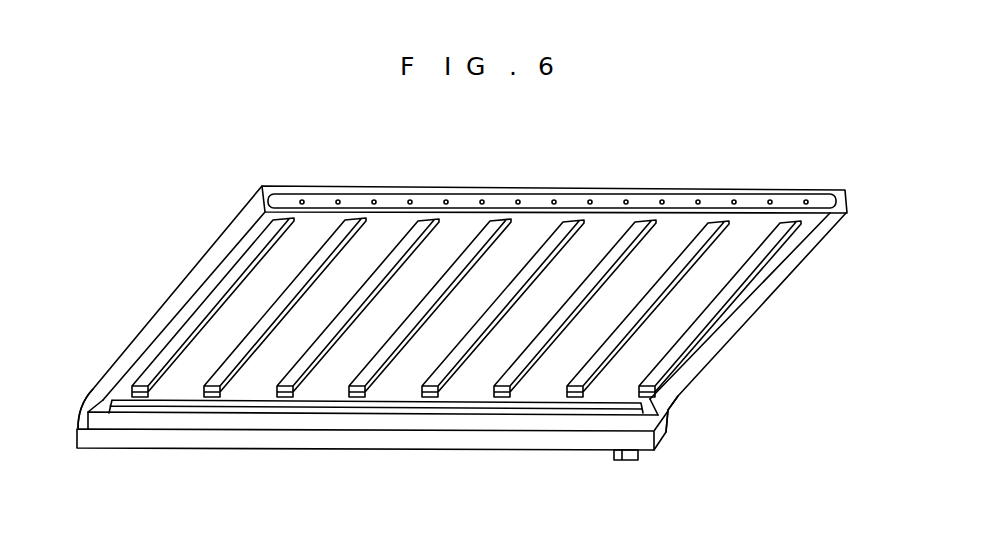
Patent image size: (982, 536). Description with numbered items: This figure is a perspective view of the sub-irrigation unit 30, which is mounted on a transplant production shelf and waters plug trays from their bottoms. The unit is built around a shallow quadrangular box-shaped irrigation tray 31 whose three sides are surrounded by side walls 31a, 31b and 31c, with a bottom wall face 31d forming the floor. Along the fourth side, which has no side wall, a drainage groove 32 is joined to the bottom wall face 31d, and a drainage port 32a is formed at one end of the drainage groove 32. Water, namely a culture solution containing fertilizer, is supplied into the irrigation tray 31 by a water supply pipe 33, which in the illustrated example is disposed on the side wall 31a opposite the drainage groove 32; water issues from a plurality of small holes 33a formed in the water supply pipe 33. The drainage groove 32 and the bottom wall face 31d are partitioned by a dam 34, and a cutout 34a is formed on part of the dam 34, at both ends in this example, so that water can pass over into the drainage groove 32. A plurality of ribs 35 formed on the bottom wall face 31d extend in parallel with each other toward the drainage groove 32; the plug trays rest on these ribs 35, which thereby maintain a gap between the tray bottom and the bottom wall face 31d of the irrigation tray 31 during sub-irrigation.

The sub-irrigation unit 30 is at (296, 170).
The irrigation tray 31 is at (436, 294).
The side wall 31a is at (500, 186).
The side wall 31b is at (200, 257).
The side wall 31c is at (790, 275).
The bottom wall face 31d is at (677, 318).
The drainage groove 32 is at (236, 433).
The drainage port 32a is at (630, 462).
The water supply pipe 33 is at (716, 202).
The small holes 33a is at (592, 200).
The dam 34 is at (402, 412).
The cutout 34a is at (105, 401).
The ribs 35 is at (345, 249).